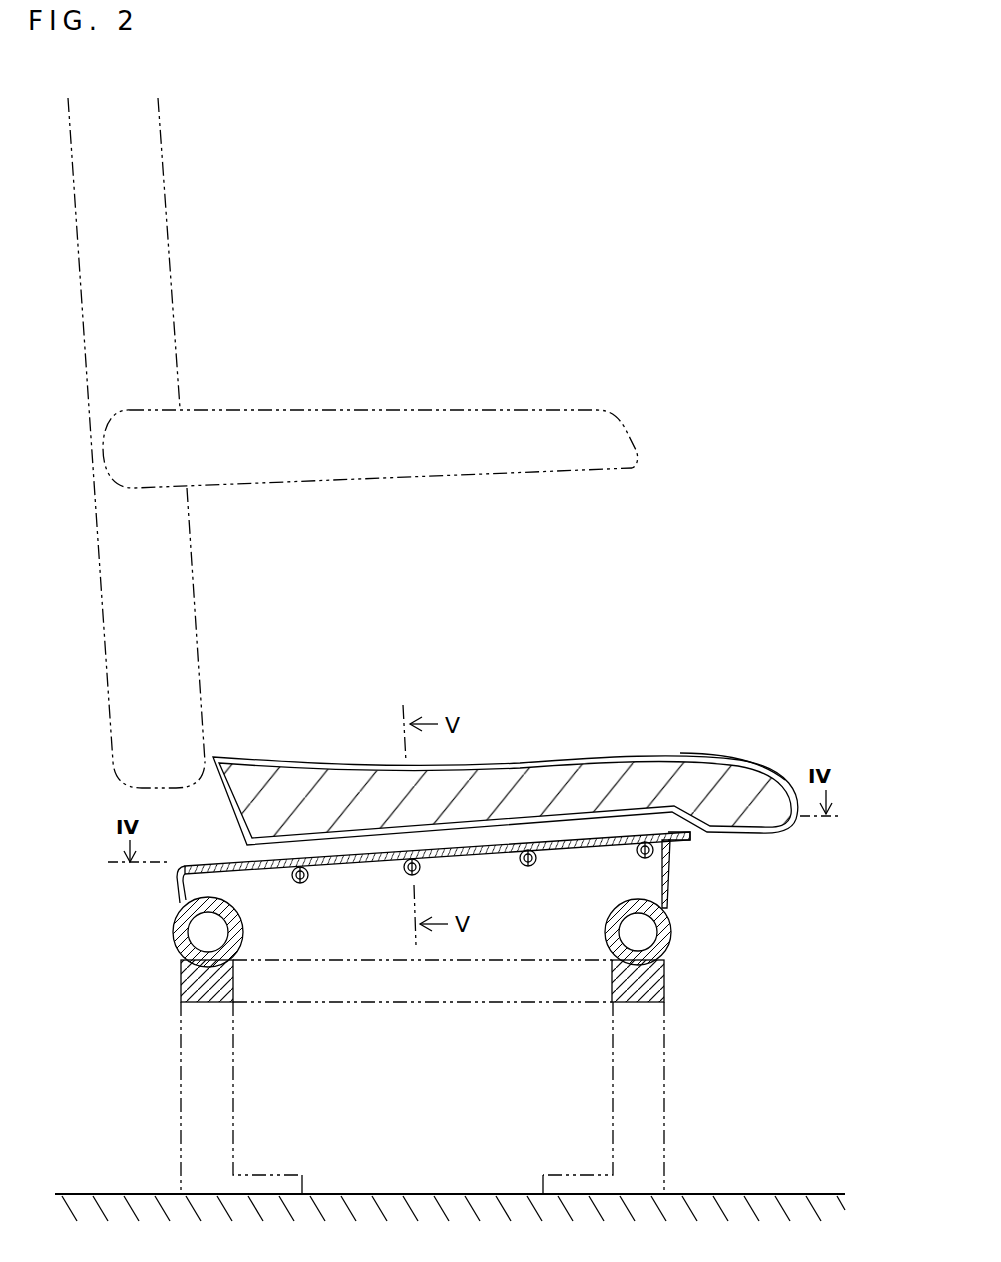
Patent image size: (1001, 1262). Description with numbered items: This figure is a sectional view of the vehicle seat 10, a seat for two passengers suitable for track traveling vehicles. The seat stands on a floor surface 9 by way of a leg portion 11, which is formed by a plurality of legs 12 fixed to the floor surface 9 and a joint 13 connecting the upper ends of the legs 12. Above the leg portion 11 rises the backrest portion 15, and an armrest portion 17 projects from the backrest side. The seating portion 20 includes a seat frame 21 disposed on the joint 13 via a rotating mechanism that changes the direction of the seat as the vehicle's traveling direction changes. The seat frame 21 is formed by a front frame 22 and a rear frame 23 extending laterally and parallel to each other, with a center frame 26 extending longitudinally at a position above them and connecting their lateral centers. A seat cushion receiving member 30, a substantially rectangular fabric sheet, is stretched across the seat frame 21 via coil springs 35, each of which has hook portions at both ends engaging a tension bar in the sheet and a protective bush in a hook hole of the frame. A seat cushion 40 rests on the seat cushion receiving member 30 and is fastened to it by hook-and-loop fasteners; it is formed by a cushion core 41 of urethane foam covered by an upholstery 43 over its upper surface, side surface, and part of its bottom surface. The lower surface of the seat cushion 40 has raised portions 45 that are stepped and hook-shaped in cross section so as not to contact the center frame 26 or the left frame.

The floor surface 9 is at (762, 1194).
The vehicle seat 10 is at (430, 142).
The leg portion 11 is at (431, 1077).
The leg 12 is at (195, 1092).
The joint 13 is at (195, 980).
The backrest portion 15 is at (160, 190).
The armrest portion 17 is at (388, 412).
The seating portion 20 is at (505, 803).
The seat frame 21 is at (678, 903).
The front frame 22 is at (665, 936).
The rear frame 23 is at (178, 934).
The center frame 26 is at (473, 858).
The seat cushion receiving member 30 is at (690, 838).
The coil spring 35 is at (300, 884).
The seat cushion 40 is at (528, 762).
The cushion core 41 is at (328, 793).
The upholstery 43 is at (676, 758).
The raised portion 45 is at (345, 840).